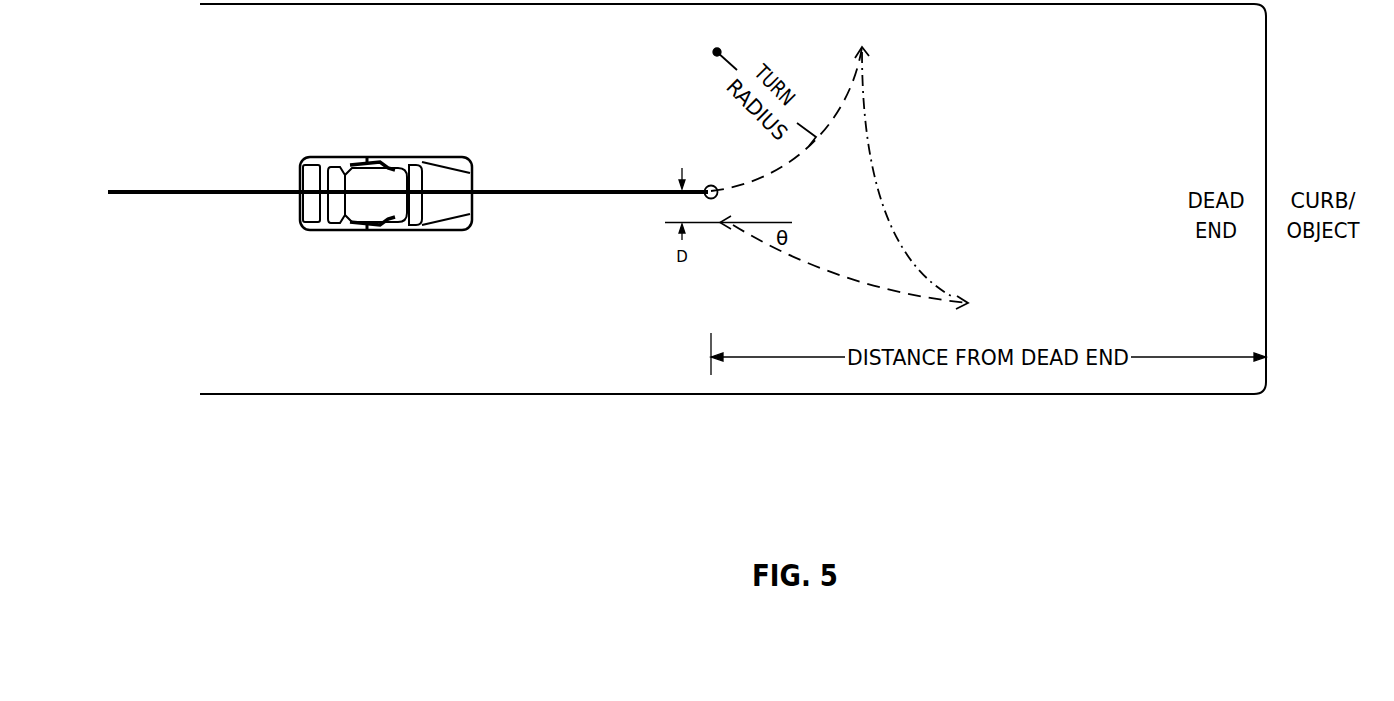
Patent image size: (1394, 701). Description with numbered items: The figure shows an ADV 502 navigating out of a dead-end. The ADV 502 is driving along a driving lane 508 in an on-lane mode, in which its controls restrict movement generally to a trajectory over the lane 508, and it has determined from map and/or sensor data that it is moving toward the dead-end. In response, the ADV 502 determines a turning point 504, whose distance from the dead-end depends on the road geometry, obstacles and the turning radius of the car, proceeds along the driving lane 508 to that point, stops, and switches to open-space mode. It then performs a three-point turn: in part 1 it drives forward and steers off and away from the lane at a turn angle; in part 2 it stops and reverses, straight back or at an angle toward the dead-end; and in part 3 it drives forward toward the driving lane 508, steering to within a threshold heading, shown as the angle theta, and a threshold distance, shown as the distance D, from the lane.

The ADV 502 is at (470, 223).
The turning point 504 is at (705, 188).
The driving lane 508 is at (408, 195).
The part '1' of the three-point turn 1 is at (790, 126).
The part '2' of the three-point turn 2 is at (908, 175).
The part '3' of the three-point turn 3 is at (850, 278).